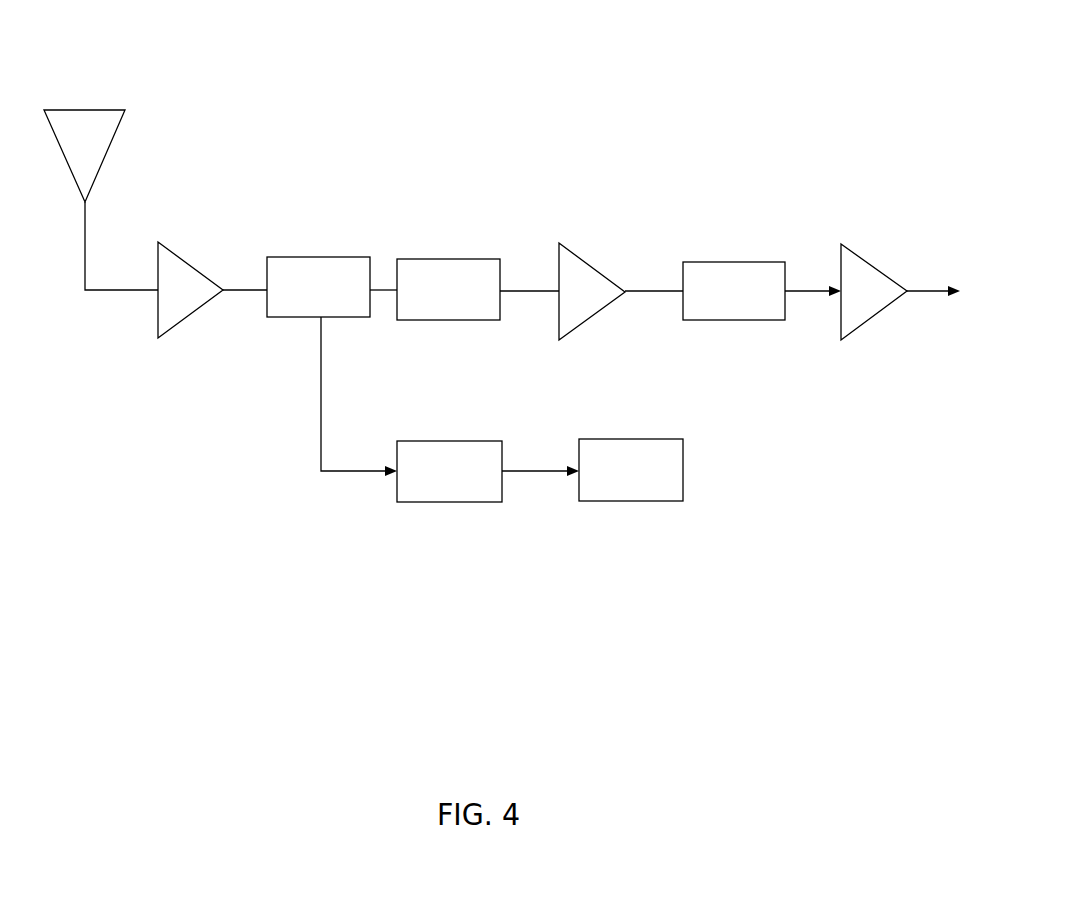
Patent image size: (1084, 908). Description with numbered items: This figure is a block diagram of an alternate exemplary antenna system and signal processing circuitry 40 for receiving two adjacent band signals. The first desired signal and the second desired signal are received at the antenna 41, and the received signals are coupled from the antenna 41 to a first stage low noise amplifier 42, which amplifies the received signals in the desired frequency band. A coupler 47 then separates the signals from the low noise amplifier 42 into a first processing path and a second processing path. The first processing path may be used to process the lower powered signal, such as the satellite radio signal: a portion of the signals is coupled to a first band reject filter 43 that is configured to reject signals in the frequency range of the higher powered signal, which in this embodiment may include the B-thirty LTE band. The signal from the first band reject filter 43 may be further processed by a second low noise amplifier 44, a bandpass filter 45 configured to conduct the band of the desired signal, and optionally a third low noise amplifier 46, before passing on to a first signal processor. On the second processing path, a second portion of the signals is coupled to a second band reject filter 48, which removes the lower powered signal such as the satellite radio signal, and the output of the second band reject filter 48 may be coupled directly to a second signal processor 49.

The receiver system 40 is at (497, 98).
The antenna 41 is at (101, 200).
The first stage low noise amplifier 42 is at (212, 290).
The first band reject filter 43 is at (478, 289).
The second LNA 44 is at (621, 291).
The bandpass filter 45 is at (762, 291).
The third LNA 46 is at (900, 292).
The coupler 47 is at (332, 366).
The second band reject filter 48 is at (488, 471).
The second signal processor 49 is at (631, 470).